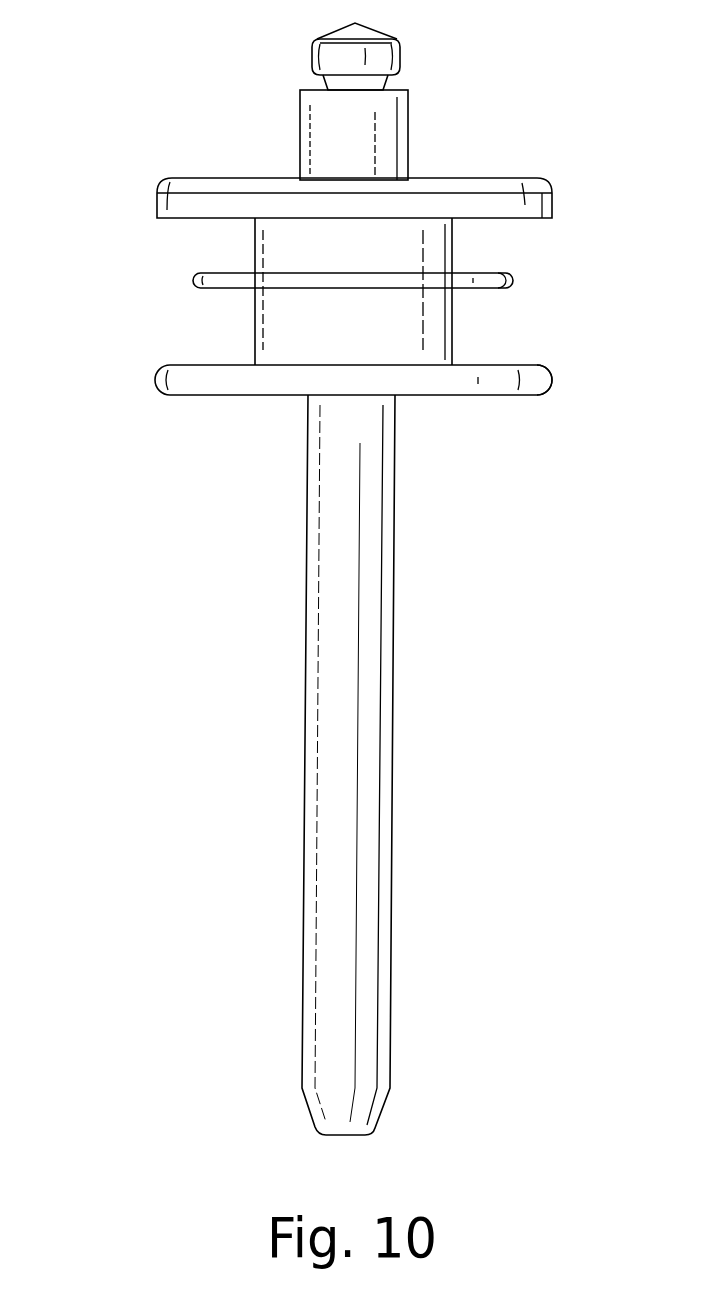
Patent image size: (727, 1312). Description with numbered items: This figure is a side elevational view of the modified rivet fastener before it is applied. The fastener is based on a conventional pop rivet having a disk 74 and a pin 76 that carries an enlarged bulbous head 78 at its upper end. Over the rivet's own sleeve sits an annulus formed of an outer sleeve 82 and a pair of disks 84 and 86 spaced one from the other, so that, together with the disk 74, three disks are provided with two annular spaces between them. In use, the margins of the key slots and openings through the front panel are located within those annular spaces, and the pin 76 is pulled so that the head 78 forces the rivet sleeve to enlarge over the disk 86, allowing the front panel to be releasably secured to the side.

The disk 74 is at (157, 373).
The pin 76 is at (390, 587).
The enlarged bulbous head 78 is at (312, 53).
The outer sleeve 82 is at (452, 321).
The disk 84 is at (193, 283).
The disk 86 is at (157, 205).